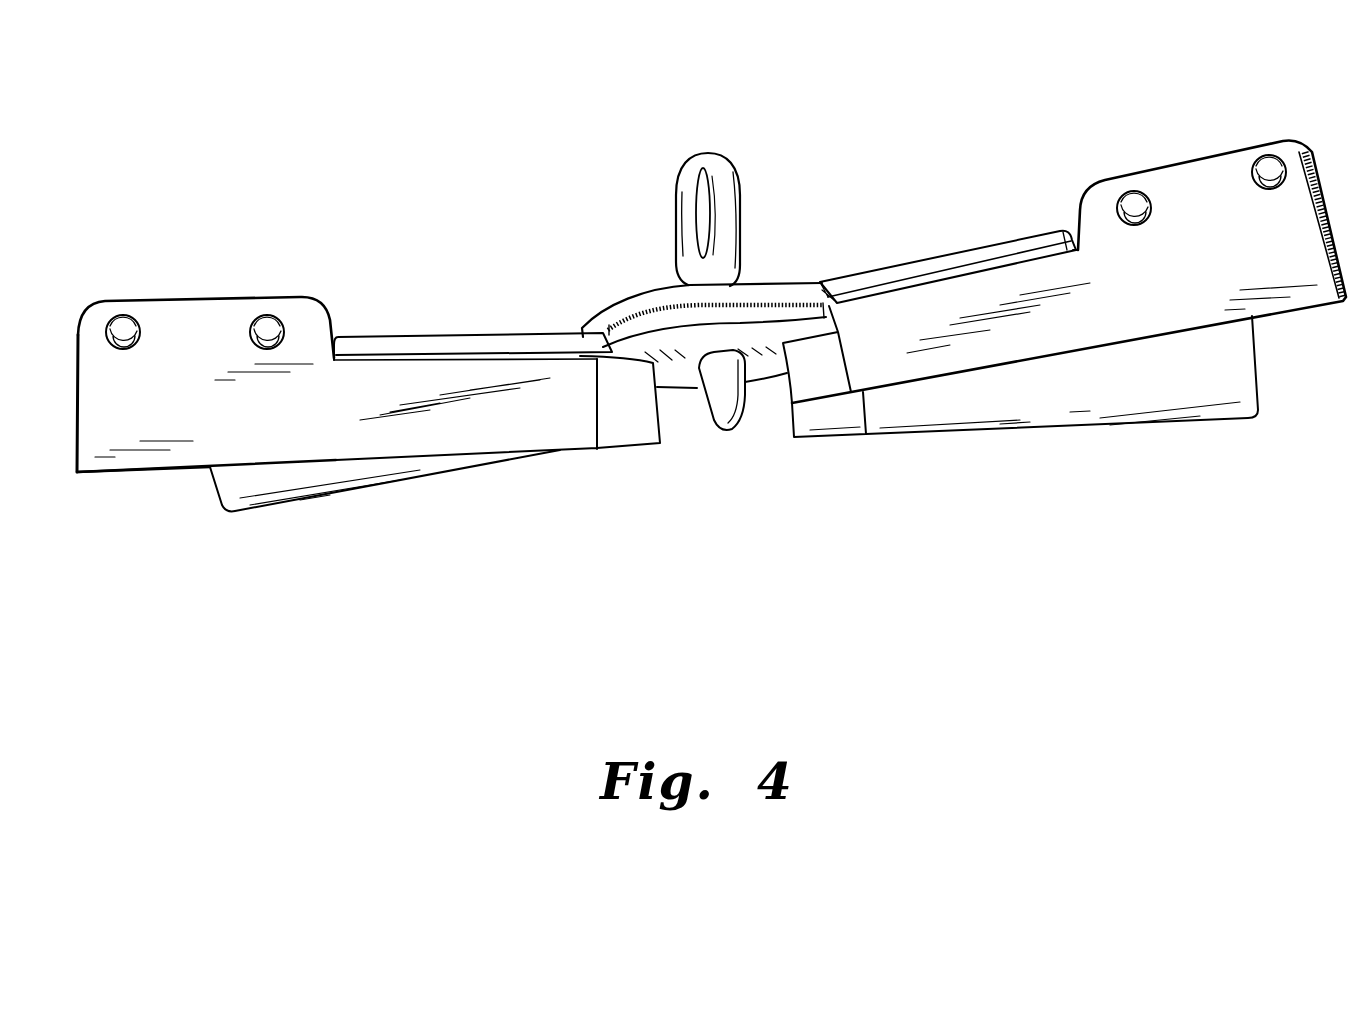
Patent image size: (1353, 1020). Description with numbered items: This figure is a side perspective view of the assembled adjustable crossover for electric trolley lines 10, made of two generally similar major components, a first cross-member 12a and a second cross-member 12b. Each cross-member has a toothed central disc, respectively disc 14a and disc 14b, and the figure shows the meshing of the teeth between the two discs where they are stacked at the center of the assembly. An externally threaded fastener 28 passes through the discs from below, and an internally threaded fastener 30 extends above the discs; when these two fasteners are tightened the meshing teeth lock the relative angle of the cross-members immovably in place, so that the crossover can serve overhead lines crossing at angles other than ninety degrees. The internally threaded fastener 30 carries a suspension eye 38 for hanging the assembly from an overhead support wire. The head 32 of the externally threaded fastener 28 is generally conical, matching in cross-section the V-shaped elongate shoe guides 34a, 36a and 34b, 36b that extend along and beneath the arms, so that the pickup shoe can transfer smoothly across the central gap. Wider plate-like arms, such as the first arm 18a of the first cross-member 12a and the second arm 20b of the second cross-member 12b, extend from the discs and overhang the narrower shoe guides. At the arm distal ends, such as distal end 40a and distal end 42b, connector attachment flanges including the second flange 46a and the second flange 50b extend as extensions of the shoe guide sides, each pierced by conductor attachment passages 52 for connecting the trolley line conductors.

The adjustable crossover for electric trolley lines 10 is at (385, 660).
The first cross-member 12a is at (420, 333).
The second cross-member 12b is at (931, 252).
The central disc 14a is at (680, 388).
The central disc 14b is at (647, 292).
The first arm 18a is at (478, 348).
The second arm 20b is at (865, 278).
The externally threaded fastener 28 is at (757, 403).
The internally threaded fastener 30 is at (745, 170).
The head 32 is at (723, 428).
The shoe guide 34a is at (182, 473).
The shoe guide 34b is at (318, 500).
The shoe guide 36a is at (1167, 424).
The shoe guide 36b is at (1097, 353).
The suspension eye 38 is at (684, 188).
The distal end 40a is at (340, 335).
The distal end 42b is at (1067, 228).
The second connector attachment flange 46a is at (205, 393).
The second connector attachment flange 50b is at (1262, 234).
The conductor attachment passages 52 is at (265, 317).